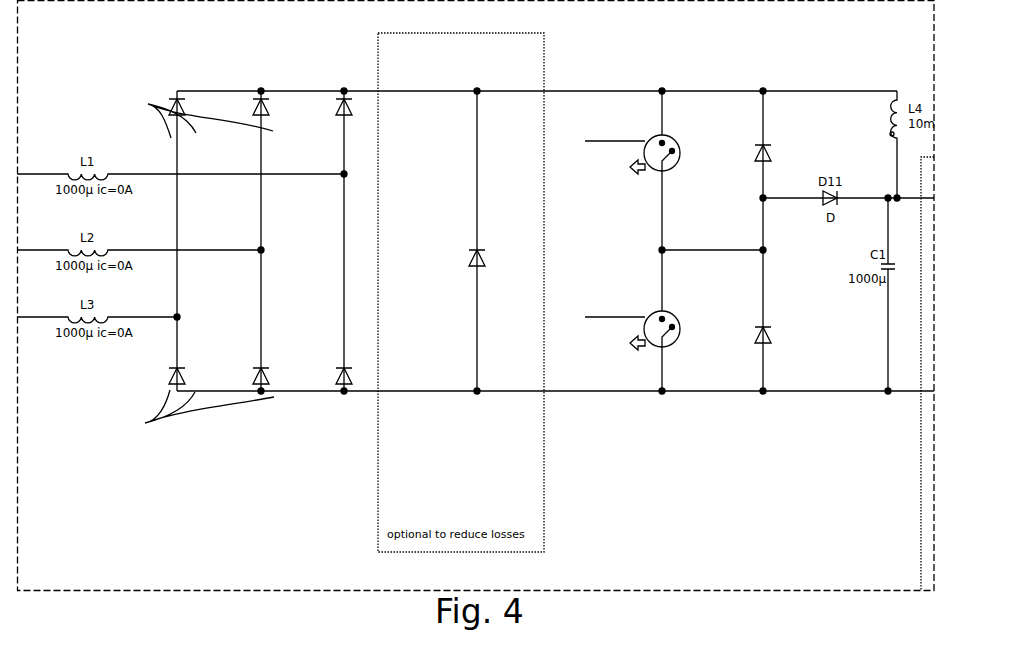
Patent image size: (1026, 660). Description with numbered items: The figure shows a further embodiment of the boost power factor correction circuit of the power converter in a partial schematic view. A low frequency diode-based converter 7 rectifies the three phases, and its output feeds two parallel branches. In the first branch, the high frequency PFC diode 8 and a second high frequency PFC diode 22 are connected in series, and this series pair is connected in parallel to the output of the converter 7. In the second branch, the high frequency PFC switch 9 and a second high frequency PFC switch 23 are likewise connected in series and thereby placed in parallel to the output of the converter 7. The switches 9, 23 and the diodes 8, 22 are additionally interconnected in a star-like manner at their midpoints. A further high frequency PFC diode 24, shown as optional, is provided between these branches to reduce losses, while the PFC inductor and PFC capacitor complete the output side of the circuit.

The low frequency diode-based converter 7 is at (357, 418).
The further high frequency PFC diode 24 is at (527, 413).
The high frequency PFC switch 9 is at (663, 141).
The high frequency PFC diode 8 is at (765, 143).
The second high frequency PFC switch 23 is at (658, 349).
The second high frequency PFC diode 22 is at (756, 357).